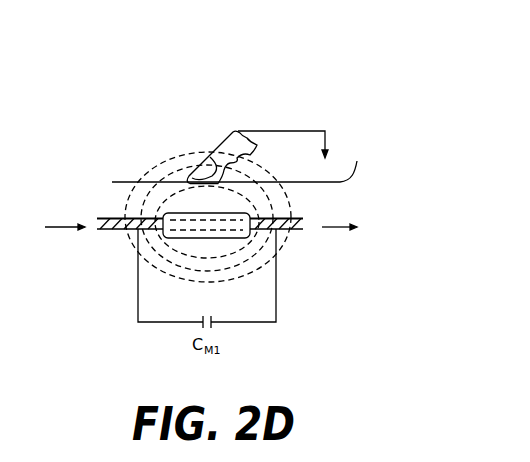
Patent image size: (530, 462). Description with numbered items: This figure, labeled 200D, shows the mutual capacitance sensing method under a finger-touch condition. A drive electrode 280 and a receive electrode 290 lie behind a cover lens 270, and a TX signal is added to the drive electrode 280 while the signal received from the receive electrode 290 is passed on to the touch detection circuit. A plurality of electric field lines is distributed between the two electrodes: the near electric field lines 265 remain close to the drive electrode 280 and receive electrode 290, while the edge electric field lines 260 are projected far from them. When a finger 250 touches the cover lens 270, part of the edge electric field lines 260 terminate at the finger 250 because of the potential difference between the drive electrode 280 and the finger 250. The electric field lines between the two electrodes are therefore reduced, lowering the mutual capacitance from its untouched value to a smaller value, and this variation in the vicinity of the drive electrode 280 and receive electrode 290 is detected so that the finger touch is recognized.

The touch sensor configuration 200D is at (276, 88).
The finger 250 is at (232, 135).
The edge electric field lines 260 is at (192, 152).
The near electric field lines 265 is at (200, 238).
The cover lens 270 is at (239, 160).
The drive electrode 280 is at (123, 230).
The receive electrode 290 is at (292, 231).